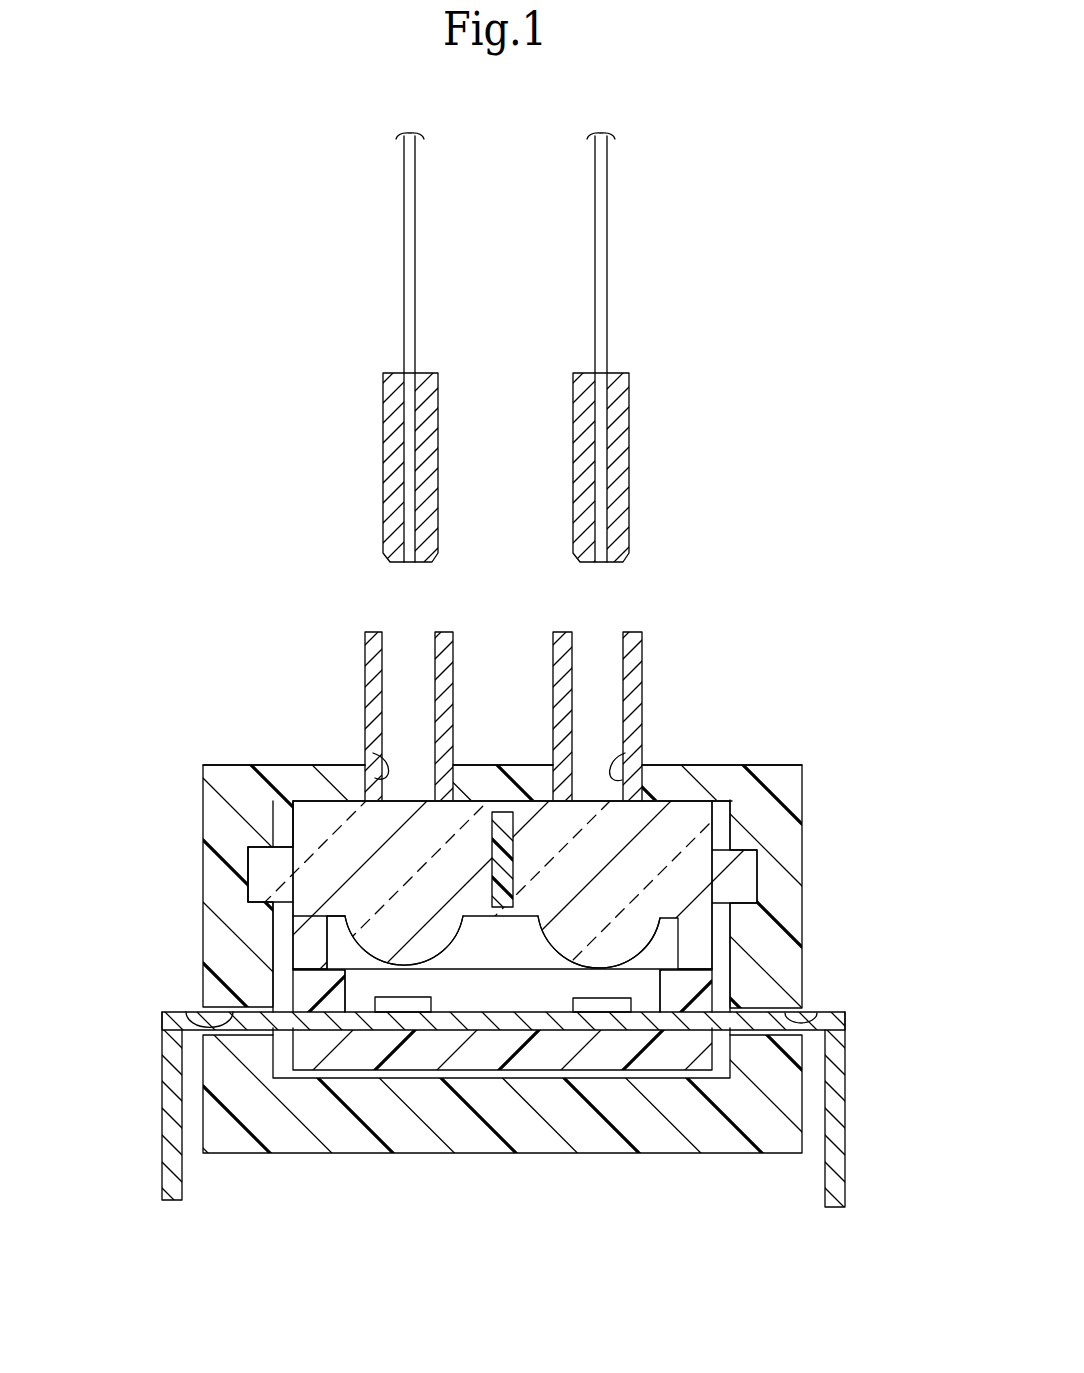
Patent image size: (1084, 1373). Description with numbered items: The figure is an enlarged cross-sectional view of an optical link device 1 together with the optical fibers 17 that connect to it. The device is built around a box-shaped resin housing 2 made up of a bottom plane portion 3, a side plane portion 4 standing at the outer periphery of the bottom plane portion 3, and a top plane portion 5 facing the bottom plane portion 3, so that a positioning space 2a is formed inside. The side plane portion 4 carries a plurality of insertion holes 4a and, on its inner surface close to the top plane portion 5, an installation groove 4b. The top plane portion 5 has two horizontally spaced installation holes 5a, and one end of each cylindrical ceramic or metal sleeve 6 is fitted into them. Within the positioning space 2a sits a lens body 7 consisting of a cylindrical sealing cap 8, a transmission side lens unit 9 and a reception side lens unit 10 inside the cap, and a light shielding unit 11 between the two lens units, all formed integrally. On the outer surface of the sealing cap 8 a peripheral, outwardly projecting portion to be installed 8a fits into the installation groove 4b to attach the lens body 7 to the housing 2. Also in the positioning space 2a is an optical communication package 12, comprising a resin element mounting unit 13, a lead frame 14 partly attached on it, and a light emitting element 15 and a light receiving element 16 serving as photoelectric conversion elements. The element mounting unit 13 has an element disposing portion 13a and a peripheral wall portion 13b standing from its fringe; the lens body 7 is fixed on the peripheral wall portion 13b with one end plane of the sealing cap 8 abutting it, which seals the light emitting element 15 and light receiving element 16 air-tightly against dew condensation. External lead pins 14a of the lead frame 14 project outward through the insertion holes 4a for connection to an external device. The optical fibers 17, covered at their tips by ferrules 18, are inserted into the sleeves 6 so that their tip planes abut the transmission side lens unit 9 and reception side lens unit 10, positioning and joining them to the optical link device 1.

The optical link device 1 is at (802, 673).
The housing 2 is at (783, 823).
The positioning space 2a is at (697, 803).
The bottom plane portion 3 is at (618, 1133).
The side plane portion 4 is at (790, 898).
The insertion holes 4a is at (186, 1012).
The installation groove 4b is at (248, 878).
The top plane portion 5 is at (683, 777).
The installation holes 5a is at (373, 753).
The sleeves 6 is at (365, 647).
The lens body 7 is at (477, 817).
The sealing cap 8 is at (372, 933).
The portion to be installed 8a is at (268, 890).
The transmission side lens unit 9 is at (325, 955).
The reception side lens unit 10 is at (622, 937).
The light shielding unit 11 is at (508, 815).
The optical communication package 12 is at (485, 1058).
The element mounting unit 13 is at (427, 1057).
The element disposing portion 13a is at (402, 1058).
The peripheral wall portion 13b is at (700, 1002).
The lead frame 14 is at (552, 1023).
The external lead pins 14a is at (165, 1077).
The light emitting element 15 is at (375, 1003).
The light receiving element 16 is at (630, 1003).
The optical fibers 17 is at (404, 196).
The ferrules 18 is at (398, 425).